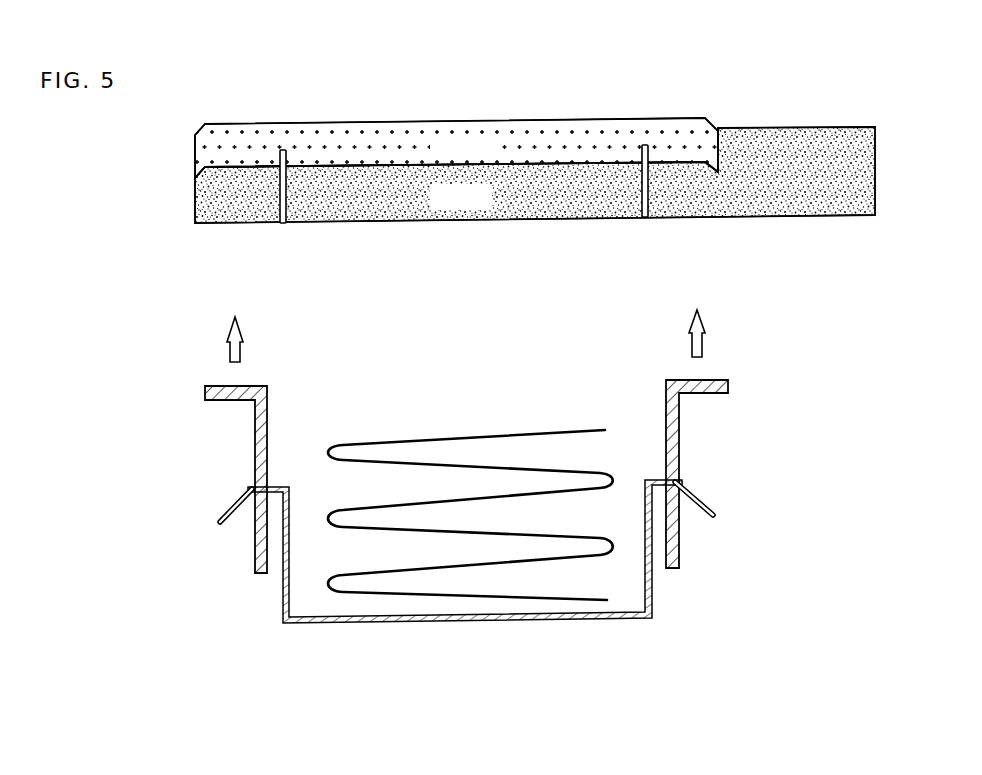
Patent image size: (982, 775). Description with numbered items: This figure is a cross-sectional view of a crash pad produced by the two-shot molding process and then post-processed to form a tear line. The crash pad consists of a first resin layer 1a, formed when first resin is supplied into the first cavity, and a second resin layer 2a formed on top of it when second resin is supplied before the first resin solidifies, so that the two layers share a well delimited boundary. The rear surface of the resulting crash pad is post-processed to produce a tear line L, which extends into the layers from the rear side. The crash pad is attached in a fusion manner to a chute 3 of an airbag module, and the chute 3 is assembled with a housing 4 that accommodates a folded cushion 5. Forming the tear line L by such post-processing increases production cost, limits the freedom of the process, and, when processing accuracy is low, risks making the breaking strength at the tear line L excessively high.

The first resin layer 1a is at (210, 197).
The second resin layer 2a is at (212, 148).
The tear line L is at (282, 223).
The chute 3 is at (680, 418).
The housing 4 is at (652, 592).
The folded cushion 5 is at (470, 565).